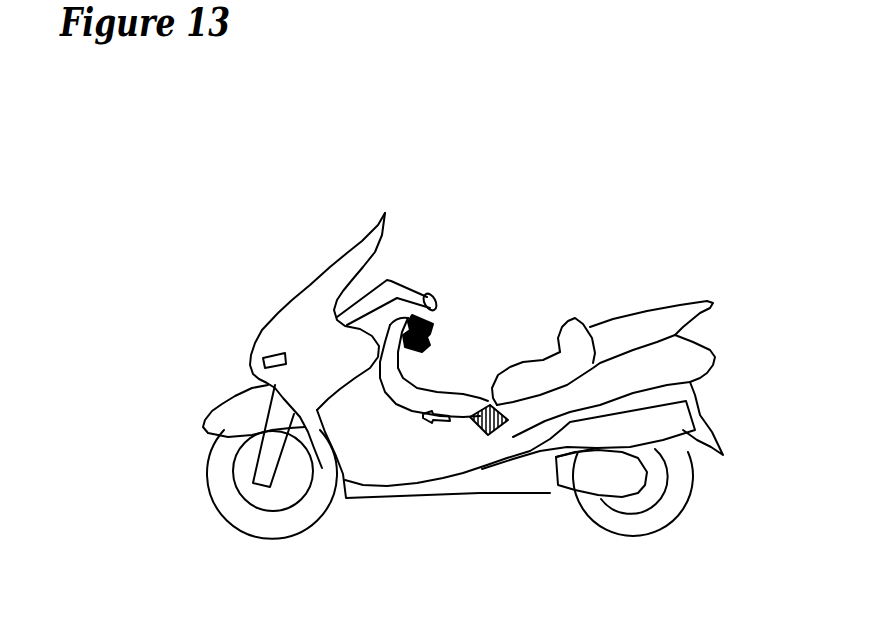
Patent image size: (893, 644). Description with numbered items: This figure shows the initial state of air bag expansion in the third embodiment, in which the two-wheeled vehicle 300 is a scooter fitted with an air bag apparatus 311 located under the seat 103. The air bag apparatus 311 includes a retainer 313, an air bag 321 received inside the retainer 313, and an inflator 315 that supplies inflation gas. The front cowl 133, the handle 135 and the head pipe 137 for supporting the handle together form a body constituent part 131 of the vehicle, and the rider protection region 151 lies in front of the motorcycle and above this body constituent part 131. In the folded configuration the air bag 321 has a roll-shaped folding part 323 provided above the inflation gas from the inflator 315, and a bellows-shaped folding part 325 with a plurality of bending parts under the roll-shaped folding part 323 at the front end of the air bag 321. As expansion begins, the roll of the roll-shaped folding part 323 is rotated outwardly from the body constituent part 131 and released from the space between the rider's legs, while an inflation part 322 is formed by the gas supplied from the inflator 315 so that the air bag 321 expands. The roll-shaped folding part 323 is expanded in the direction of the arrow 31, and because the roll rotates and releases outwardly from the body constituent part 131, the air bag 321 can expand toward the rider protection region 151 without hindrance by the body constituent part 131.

The two-wheeled vehicle 300 is at (633, 223).
The seat 103 is at (576, 338).
The body constituent part 131 is at (363, 395).
The front cowl 133 is at (290, 300).
The handle 135 is at (395, 272).
The head pipe for supporting a handle 137 is at (273, 457).
The rider protection region 151 is at (459, 170).
The air bag 321 is at (482, 215).
The inflation part 322 is at (458, 390).
The roll-shaped folding part 323 is at (490, 296).
The bellows-shaped folding part 325 is at (437, 313).
The arrow 31 is at (437, 423).
The air bag apparatus 311 is at (513, 440).
The retainer 313 is at (498, 430).
The inflator 315 is at (481, 432).